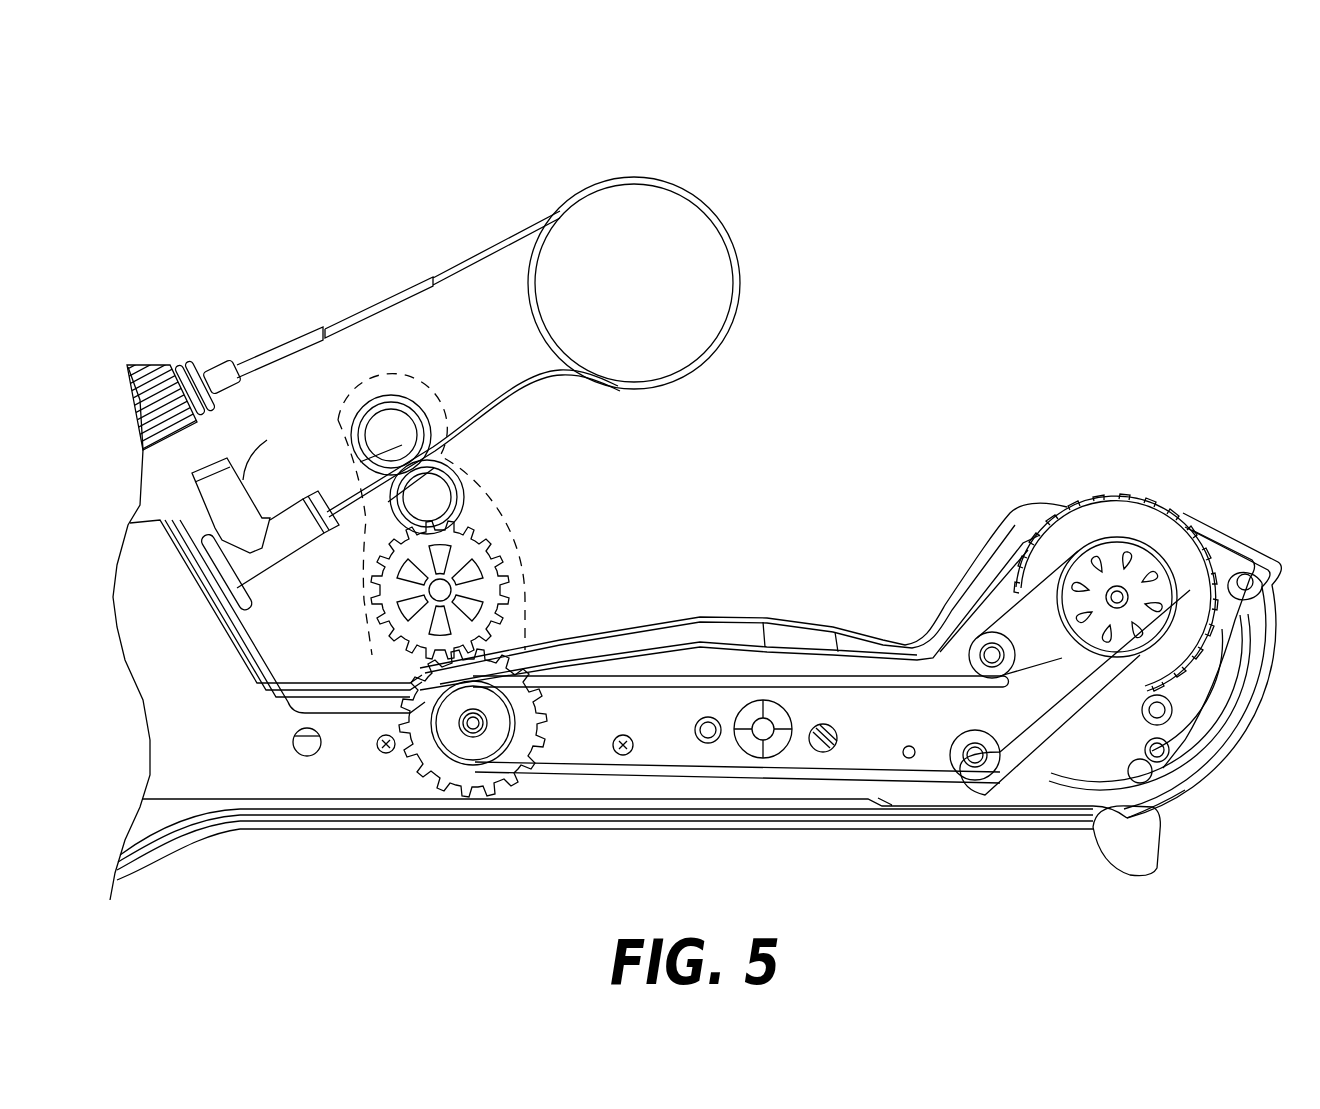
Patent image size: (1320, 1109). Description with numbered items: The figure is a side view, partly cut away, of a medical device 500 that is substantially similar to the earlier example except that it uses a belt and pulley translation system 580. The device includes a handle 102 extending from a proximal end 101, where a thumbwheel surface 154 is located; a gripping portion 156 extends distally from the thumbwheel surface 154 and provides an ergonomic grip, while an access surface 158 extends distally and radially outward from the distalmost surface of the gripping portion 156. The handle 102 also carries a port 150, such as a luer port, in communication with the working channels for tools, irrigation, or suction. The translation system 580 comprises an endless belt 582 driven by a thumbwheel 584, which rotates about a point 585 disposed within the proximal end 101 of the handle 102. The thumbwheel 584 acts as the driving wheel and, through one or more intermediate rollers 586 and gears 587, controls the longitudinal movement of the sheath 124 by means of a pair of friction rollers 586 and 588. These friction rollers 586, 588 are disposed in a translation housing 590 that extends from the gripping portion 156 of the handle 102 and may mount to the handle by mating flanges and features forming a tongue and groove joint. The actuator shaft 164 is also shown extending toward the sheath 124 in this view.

The medical device 500 is at (272, 152).
The actuator shaft 164 is at (142, 300).
The sheath 124 is at (540, 212).
The roller 586 is at (405, 392).
The port 150 is at (242, 462).
The friction roller 588 is at (472, 493).
The gear 587 is at (505, 547).
The translation housing 590 is at (530, 625).
The access surface 158 is at (258, 640).
The gripping portion 156 is at (940, 602).
The thumbwheel 584 is at (1082, 500).
The point 585 is at (1120, 594).
The thumbwheel surface 154 is at (1242, 543).
The translation system 580 is at (827, 870).
The endless belt 582 is at (792, 772).
The proximal end 101 is at (1215, 778).
The handle 102 is at (1052, 872).